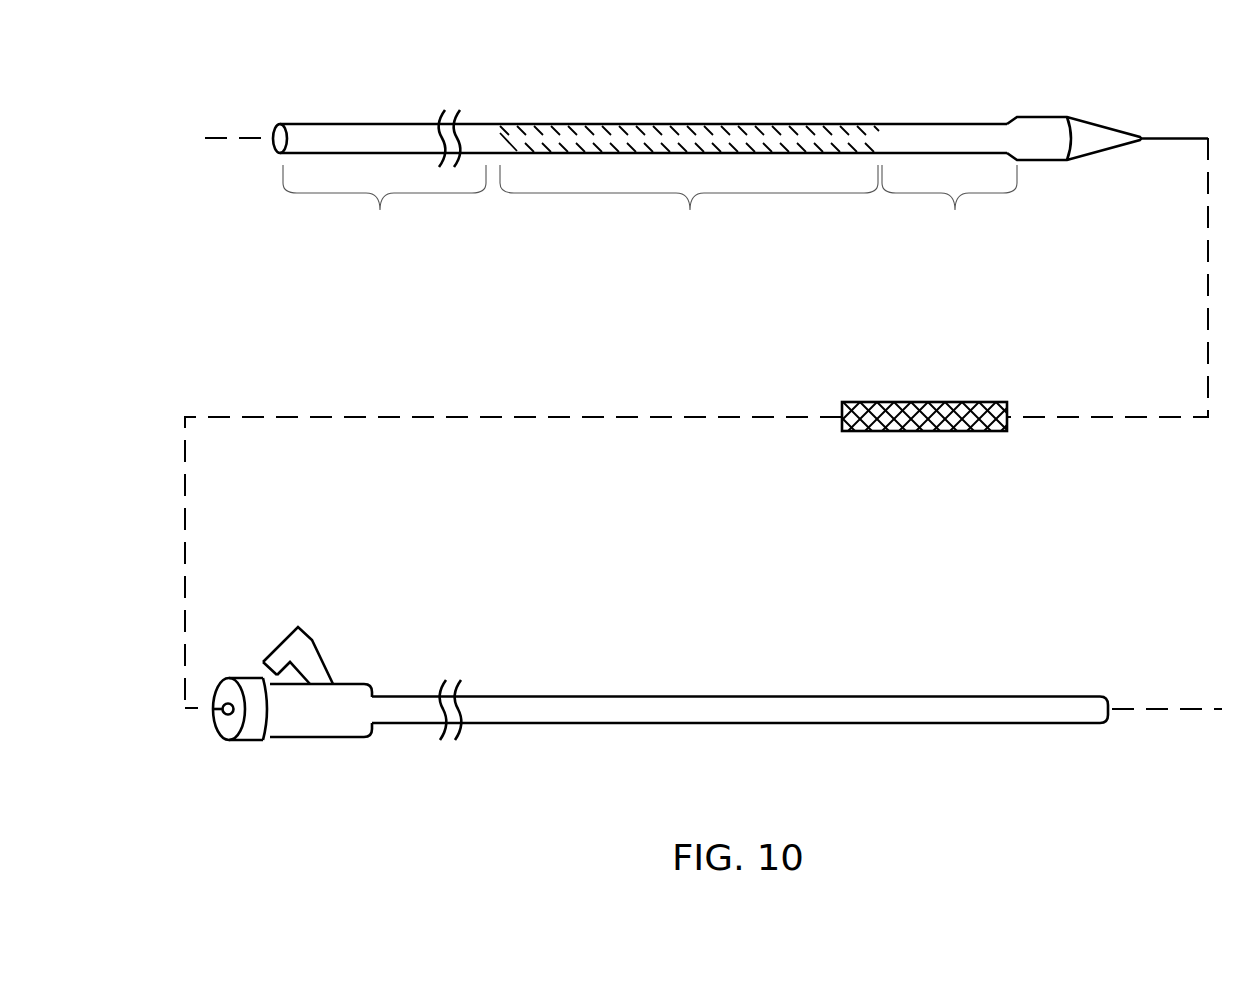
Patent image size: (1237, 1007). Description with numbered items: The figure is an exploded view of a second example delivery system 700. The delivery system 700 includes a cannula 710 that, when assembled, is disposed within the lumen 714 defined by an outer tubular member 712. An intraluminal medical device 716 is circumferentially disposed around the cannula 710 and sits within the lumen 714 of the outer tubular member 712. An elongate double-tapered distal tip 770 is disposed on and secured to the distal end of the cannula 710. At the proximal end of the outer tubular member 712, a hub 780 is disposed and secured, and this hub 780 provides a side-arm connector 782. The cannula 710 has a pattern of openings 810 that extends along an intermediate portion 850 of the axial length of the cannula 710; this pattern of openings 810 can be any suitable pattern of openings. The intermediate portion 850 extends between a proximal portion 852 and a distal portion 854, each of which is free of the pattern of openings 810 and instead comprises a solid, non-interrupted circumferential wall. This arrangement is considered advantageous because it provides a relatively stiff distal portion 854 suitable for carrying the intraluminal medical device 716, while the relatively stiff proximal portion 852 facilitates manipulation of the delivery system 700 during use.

The delivery system 700 is at (326, 395).
The cannula 710 is at (360, 124).
The pattern of openings 810 is at (677, 114).
The elongate double-tapered distal tip 770 is at (1089, 137).
The proximal portion 852 is at (384, 209).
The intermediate portion 850 is at (689, 209).
The distal portion 854 is at (949, 209).
The intraluminal medical device 716 is at (928, 402).
The hub 780 is at (316, 717).
The side-arm connector 782 is at (313, 668).
The outer tubular member 712 is at (556, 710).
The lumen 714 is at (1111, 697).